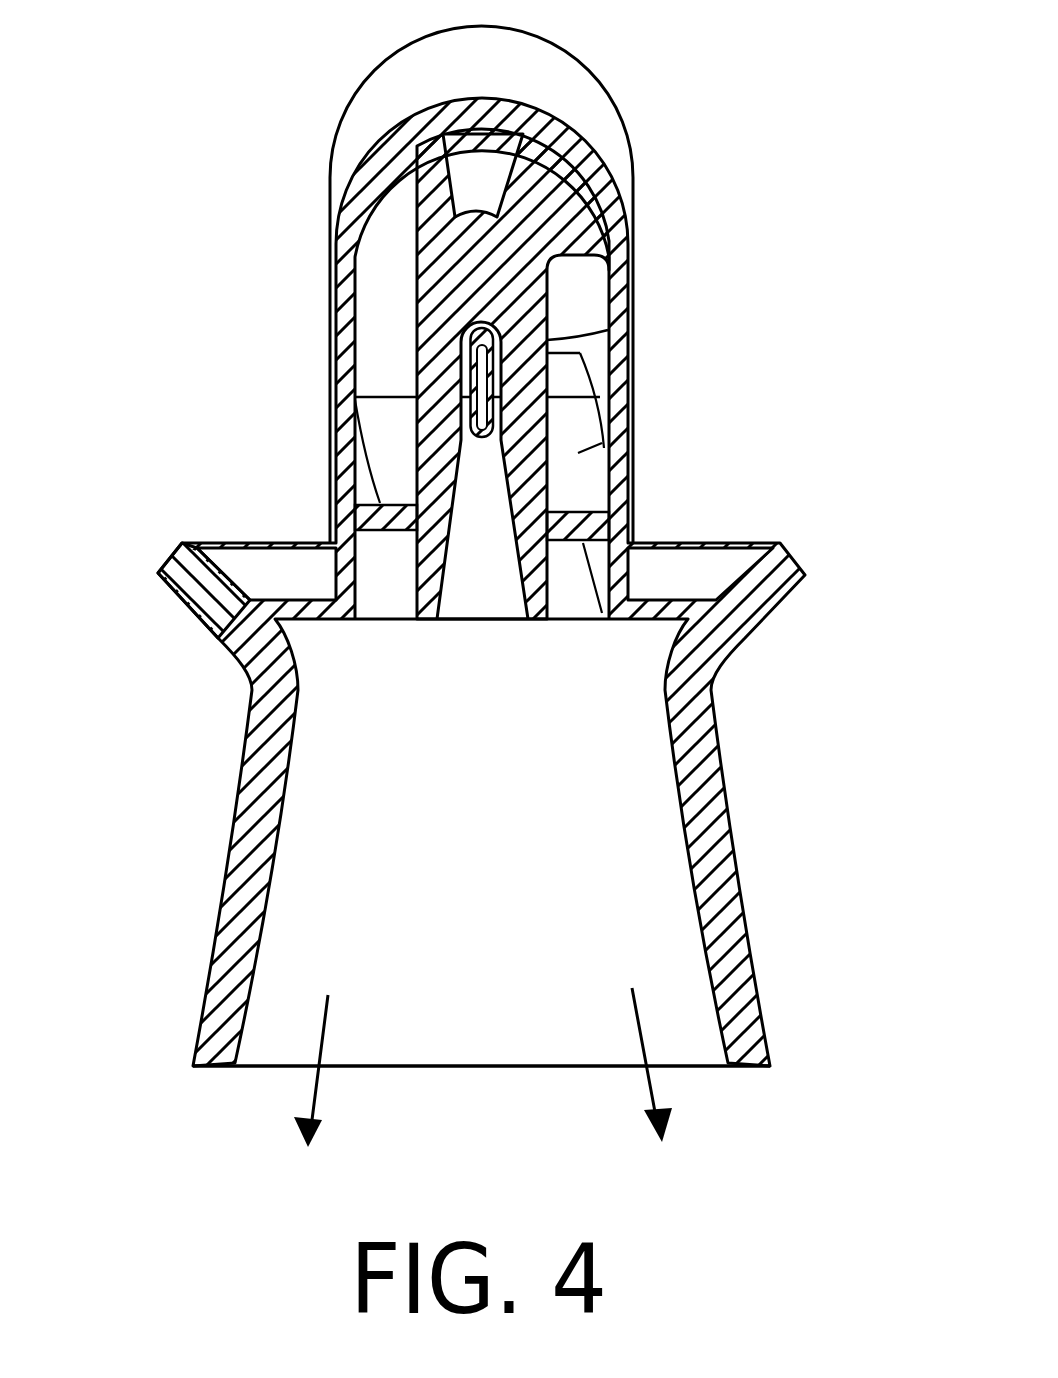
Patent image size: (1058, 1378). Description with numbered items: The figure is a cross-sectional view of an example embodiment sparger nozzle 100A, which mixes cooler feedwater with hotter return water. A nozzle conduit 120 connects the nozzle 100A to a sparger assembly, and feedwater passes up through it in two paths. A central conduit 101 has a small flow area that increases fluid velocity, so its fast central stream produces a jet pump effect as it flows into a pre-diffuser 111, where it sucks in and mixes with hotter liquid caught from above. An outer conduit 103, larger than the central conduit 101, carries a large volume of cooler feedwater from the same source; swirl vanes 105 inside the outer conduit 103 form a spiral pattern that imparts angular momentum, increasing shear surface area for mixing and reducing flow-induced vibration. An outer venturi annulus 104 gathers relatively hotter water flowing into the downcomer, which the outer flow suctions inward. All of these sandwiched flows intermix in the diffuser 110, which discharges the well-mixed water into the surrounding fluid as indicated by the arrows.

The nozzle 100A is at (122, 905).
The central conduit 101 is at (457, 380).
The outer conduit 103 is at (597, 373).
The outer venturi annulus 104 is at (710, 573).
The swirl vanes 105 is at (578, 453).
The diffuser 110 is at (750, 1012).
The pre-diffuser 111 is at (477, 547).
The nozzle conduit 120 is at (356, 90).